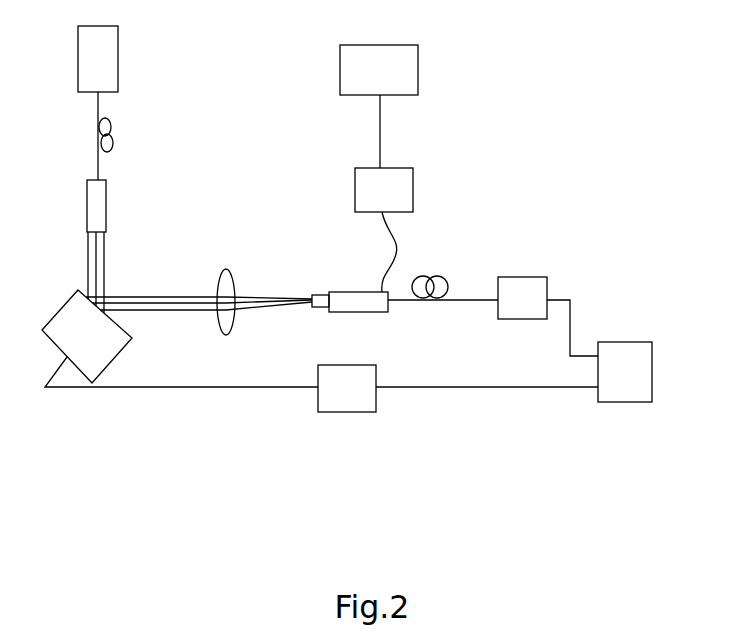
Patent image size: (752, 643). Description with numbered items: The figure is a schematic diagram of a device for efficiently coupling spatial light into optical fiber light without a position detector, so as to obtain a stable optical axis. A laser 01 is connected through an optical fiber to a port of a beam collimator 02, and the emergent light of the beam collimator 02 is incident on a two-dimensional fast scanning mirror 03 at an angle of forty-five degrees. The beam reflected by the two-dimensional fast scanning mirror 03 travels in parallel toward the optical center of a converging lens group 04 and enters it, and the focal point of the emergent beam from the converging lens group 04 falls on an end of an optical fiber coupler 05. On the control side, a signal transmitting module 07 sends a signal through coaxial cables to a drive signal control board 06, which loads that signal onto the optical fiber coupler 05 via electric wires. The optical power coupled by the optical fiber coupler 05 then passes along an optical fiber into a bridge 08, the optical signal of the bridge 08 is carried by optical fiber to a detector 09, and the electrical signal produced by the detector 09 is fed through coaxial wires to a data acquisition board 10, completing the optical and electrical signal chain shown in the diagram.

The laser 01 is at (98, 59).
The beam collimator 02 is at (79, 206).
The two-dimensional fast scanning mirror 03 is at (87, 336).
The converging lens group 04 is at (226, 278).
The optical fiber coupler 05 is at (350, 284).
The drive signal control board 06 is at (384, 190).
The signal transmitting module 07 is at (379, 70).
The bridge 08 is at (522, 298).
The detector 09 is at (625, 372).
The data acquisition board 10 is at (347, 388).